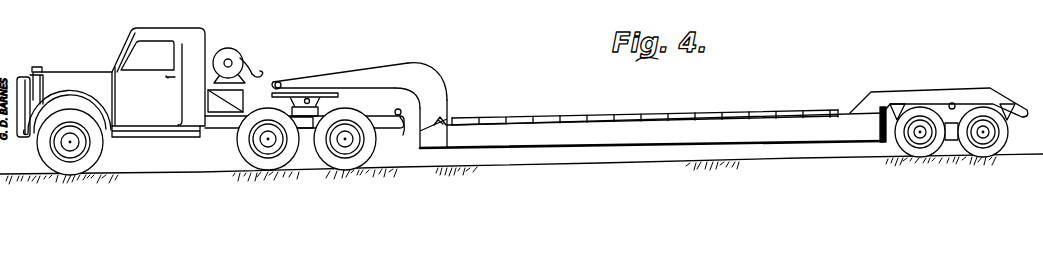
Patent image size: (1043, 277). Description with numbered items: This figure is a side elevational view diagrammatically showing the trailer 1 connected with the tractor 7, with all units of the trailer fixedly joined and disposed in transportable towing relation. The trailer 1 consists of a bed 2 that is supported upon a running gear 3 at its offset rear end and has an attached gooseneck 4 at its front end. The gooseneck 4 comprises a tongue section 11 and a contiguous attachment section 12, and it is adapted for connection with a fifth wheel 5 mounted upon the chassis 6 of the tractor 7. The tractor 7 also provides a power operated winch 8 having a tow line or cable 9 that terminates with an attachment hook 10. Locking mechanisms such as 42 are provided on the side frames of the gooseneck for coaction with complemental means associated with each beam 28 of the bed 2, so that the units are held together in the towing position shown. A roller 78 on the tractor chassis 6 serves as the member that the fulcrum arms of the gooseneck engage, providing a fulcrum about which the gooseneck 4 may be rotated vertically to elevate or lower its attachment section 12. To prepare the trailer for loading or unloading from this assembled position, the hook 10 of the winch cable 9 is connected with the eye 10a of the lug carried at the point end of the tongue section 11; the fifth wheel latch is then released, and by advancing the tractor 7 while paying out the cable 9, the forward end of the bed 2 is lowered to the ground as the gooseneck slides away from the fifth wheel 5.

The trailer 1 is at (763, 109).
The bed 2 is at (583, 128).
The running gear 3 is at (916, 112).
The gooseneck 4 is at (422, 61).
The fifth wheel 5 is at (312, 94).
The chassis 6 is at (396, 113).
The tractor 7 is at (110, 52).
The winch 8 is at (229, 49).
The cable 9 is at (251, 71).
The attachment hook 10 is at (263, 78).
The eye 10a is at (280, 82).
The tongue section 11 is at (362, 68).
The attachment section 12 is at (449, 91).
The beam 28 is at (435, 150).
The locking mechanism 42 is at (450, 118).
The roller 78 is at (398, 136).